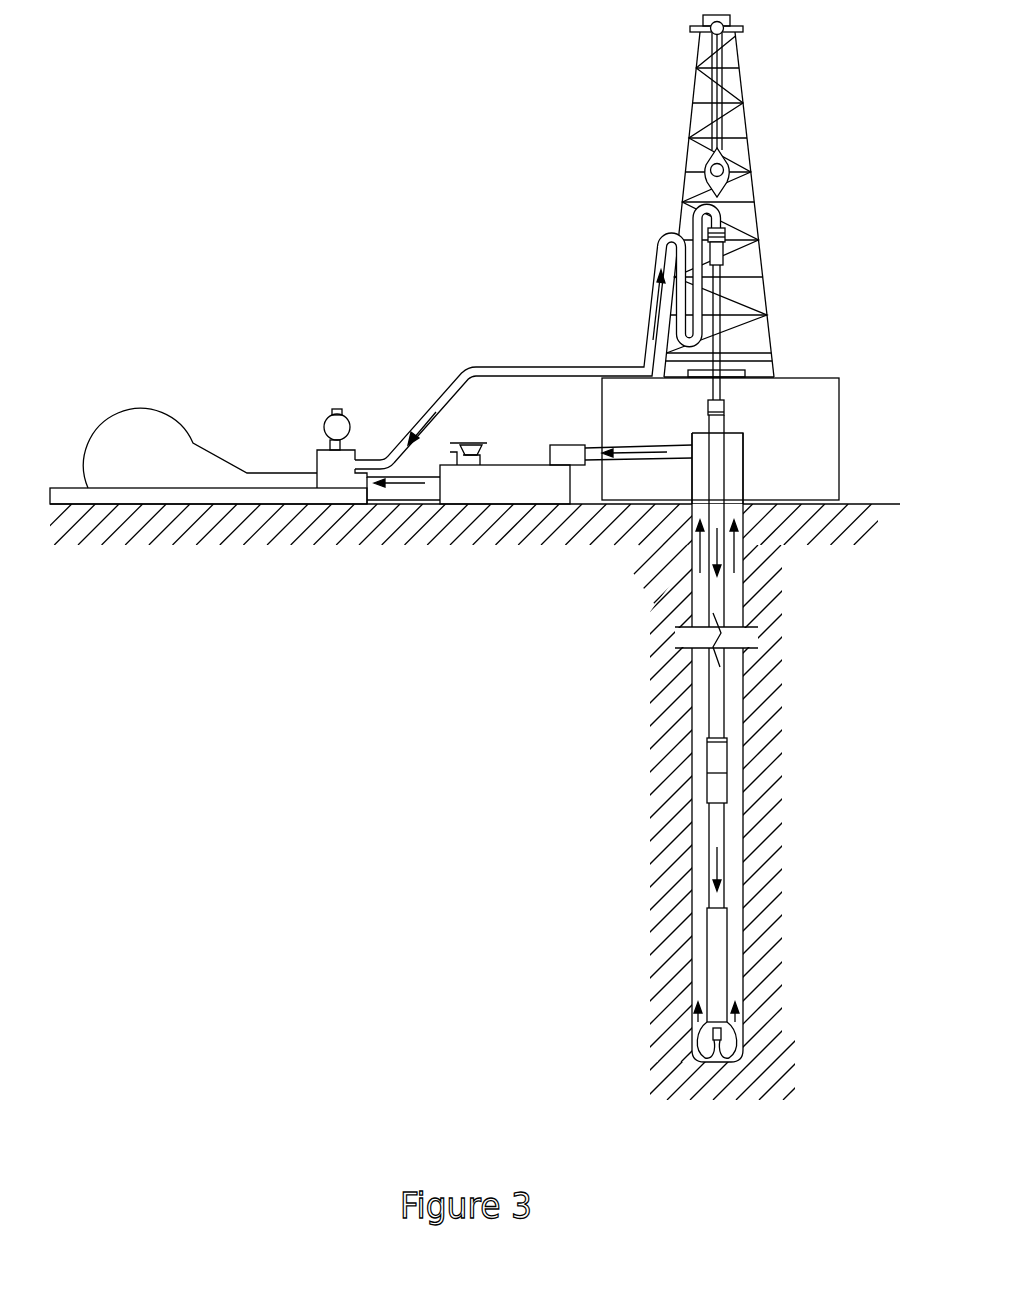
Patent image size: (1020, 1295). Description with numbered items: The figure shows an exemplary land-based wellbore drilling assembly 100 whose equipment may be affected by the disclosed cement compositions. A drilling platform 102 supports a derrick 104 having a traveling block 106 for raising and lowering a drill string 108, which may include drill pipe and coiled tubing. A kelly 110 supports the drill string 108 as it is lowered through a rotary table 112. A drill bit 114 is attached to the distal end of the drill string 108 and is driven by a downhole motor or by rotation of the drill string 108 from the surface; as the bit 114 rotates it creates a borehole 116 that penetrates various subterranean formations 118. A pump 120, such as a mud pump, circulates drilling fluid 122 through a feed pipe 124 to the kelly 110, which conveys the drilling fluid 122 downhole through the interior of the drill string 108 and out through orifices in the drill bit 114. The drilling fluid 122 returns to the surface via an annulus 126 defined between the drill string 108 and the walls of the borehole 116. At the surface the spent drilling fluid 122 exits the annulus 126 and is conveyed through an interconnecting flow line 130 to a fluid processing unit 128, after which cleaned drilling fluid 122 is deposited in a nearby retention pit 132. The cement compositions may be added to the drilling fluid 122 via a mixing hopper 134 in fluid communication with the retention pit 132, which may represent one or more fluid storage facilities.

The wellbore drilling assembly 100 is at (436, 94).
The drilling platform 102 is at (840, 387).
The derrick 104 is at (747, 115).
The traveling block 106 is at (730, 160).
The drill string 108 is at (718, 605).
The kelly 110 is at (717, 287).
The rotary table 112 is at (745, 373).
The drill bit 114 is at (727, 1036).
The borehole 116 is at (745, 703).
The subterranean formations 118 is at (581, 734).
The pump 120 is at (155, 469).
The drilling fluid 122 is at (628, 457).
The feed pipe 124 is at (487, 368).
The annulus 126 is at (733, 860).
The fluid processing unit 128 is at (562, 448).
The flow line 130 is at (673, 458).
The retention pit 132 is at (545, 493).
The mixing hopper 134 is at (457, 468).